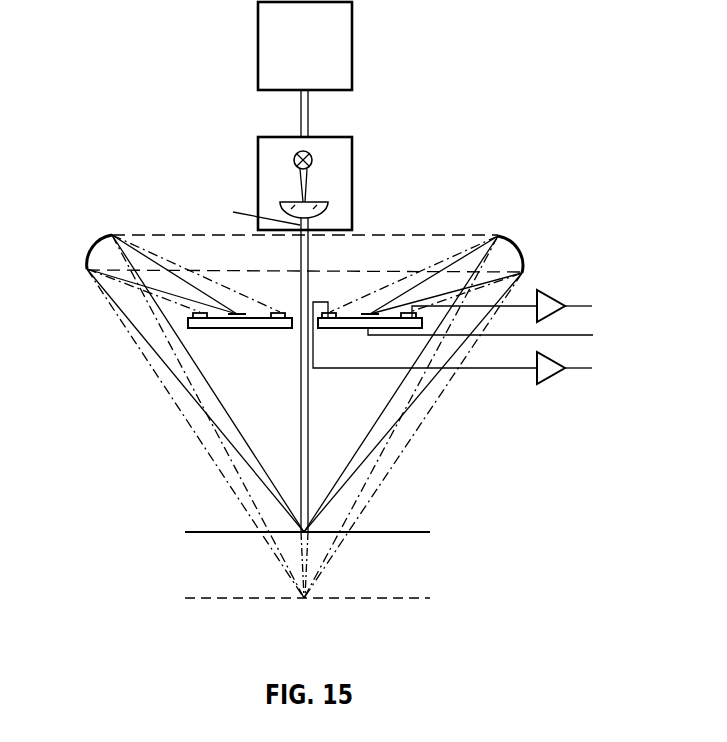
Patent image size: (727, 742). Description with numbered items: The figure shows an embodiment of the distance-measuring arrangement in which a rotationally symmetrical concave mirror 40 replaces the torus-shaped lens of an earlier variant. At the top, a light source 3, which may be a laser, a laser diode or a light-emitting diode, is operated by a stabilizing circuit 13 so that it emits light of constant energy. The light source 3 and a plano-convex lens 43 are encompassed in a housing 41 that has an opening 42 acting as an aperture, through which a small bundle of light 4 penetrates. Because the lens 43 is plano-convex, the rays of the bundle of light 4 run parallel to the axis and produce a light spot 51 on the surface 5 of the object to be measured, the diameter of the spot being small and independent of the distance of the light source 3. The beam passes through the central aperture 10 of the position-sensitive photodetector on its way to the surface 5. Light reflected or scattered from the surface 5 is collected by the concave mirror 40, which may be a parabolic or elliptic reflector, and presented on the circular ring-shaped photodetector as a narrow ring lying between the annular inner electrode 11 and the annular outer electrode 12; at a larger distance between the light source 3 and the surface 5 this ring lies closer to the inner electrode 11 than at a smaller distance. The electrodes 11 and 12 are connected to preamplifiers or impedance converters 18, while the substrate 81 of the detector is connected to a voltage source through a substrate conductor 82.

The stabilizing circuit 13 is at (314, 57).
The light source 3 is at (311, 164).
The housing 41 is at (352, 166).
The opening 42 is at (253, 213).
The lens 43 is at (328, 211).
The light beam 4 is at (307, 435).
The rotationally symmetrical concave mirror 40 is at (512, 250).
The inner electrode 11 is at (278, 311).
The outer electrode 12 is at (190, 314).
The central aperture 10 is at (293, 331).
The substrate 81 is at (340, 328).
The substrate conductor 82 is at (593, 335).
The preamplifiers or impedance converters 18 is at (553, 293).
The surface 5 is at (395, 532).
The light spot 51 is at (297, 532).